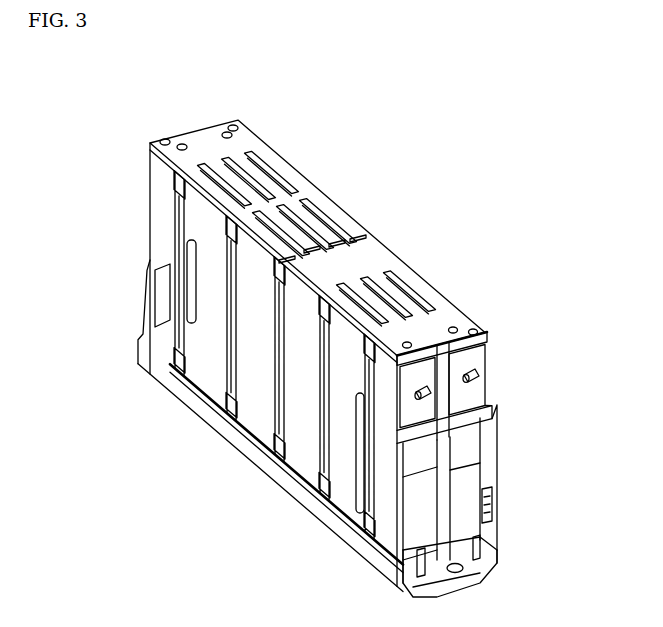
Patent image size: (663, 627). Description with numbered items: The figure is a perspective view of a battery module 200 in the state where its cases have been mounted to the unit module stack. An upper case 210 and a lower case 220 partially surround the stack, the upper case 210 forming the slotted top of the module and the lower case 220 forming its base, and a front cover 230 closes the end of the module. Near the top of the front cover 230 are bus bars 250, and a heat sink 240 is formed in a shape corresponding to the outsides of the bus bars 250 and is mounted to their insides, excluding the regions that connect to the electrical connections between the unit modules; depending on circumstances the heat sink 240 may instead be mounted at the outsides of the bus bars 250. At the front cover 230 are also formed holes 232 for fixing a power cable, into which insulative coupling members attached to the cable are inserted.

The battery module 200 is at (85, 110).
The upper case 210 is at (158, 177).
The lower case 220 is at (153, 365).
The front cover 230 is at (488, 482).
The holes 232 is at (493, 504).
The heat sink 240 is at (480, 352).
The bus bars 250 is at (470, 402).